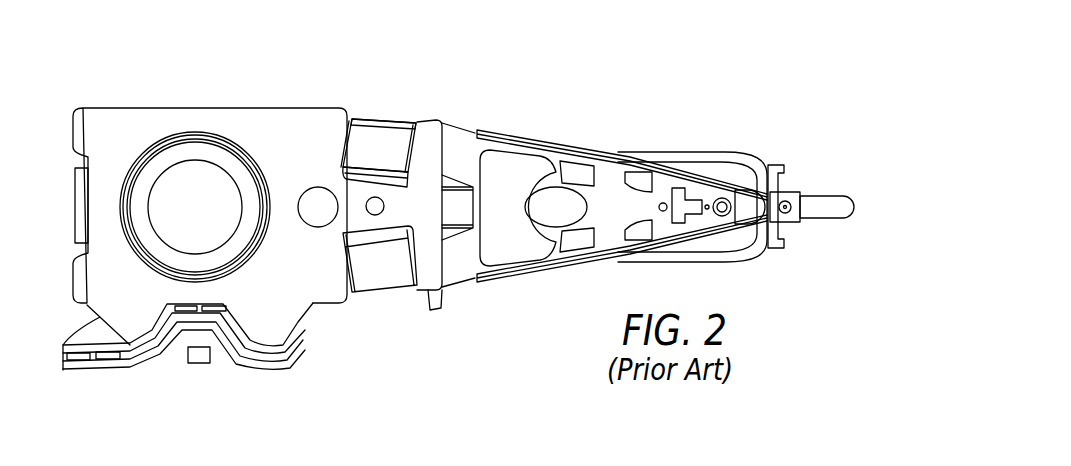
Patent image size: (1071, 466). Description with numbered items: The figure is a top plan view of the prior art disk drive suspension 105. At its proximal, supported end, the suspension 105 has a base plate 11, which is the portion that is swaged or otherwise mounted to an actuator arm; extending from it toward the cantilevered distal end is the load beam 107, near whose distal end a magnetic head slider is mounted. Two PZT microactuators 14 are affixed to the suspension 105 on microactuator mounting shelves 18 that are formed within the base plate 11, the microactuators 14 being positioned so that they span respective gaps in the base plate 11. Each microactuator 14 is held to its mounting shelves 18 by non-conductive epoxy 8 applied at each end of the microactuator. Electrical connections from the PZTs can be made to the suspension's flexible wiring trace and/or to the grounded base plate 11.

The non-conductive epoxy 8 is at (353, 119).
The PZT microactuator 14 is at (373, 133).
The microactuator mounting shelf 18 is at (404, 182).
The disk drive suspension 105 is at (464, 96).
The load beam 107 is at (547, 148).
The base plate 11 is at (148, 326).